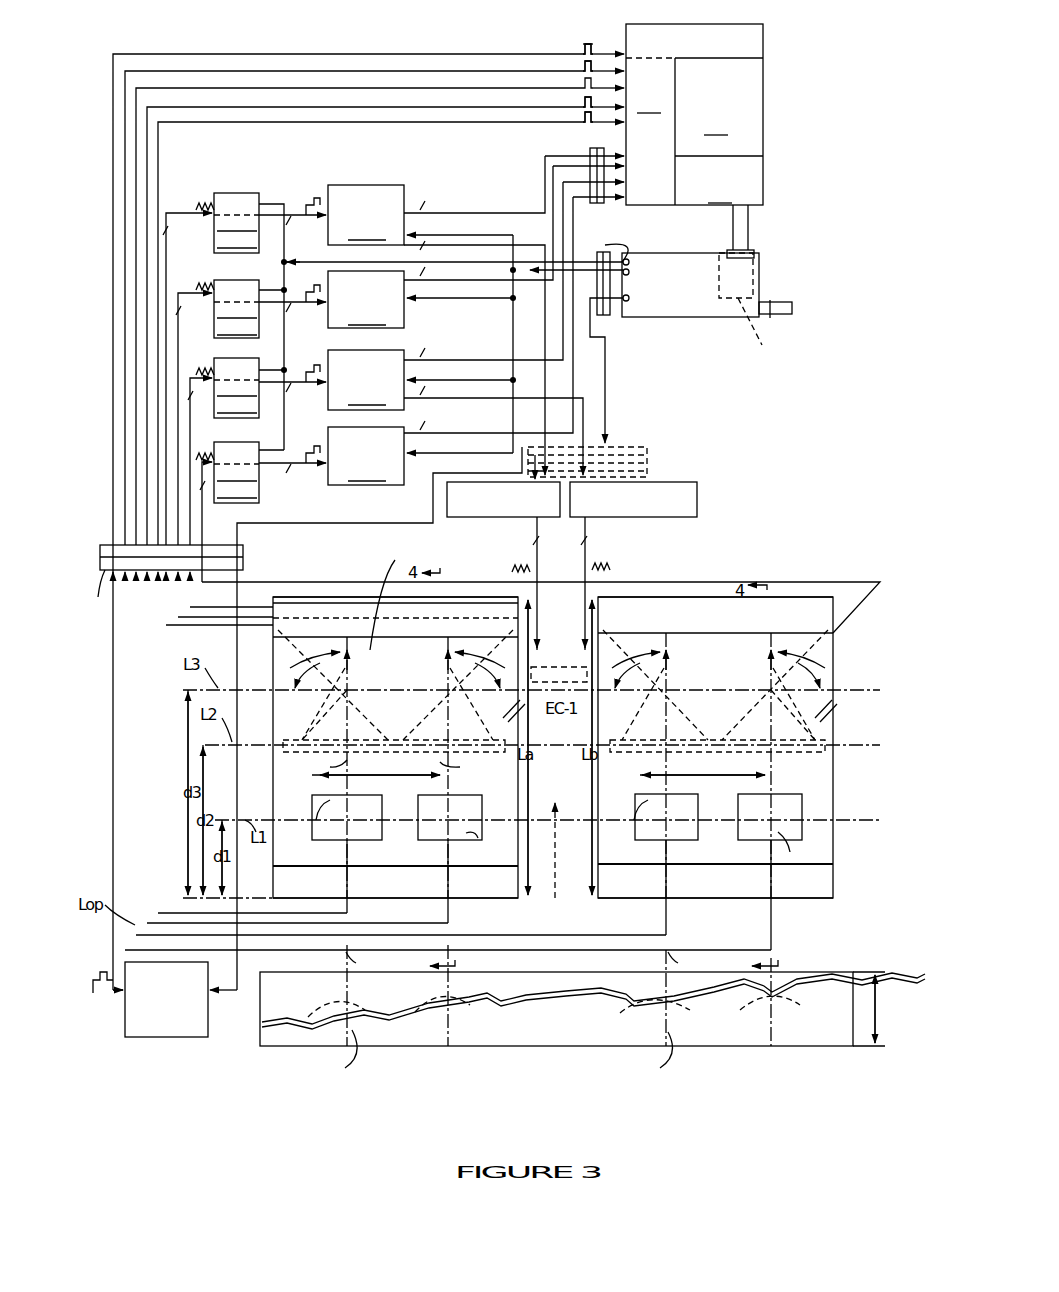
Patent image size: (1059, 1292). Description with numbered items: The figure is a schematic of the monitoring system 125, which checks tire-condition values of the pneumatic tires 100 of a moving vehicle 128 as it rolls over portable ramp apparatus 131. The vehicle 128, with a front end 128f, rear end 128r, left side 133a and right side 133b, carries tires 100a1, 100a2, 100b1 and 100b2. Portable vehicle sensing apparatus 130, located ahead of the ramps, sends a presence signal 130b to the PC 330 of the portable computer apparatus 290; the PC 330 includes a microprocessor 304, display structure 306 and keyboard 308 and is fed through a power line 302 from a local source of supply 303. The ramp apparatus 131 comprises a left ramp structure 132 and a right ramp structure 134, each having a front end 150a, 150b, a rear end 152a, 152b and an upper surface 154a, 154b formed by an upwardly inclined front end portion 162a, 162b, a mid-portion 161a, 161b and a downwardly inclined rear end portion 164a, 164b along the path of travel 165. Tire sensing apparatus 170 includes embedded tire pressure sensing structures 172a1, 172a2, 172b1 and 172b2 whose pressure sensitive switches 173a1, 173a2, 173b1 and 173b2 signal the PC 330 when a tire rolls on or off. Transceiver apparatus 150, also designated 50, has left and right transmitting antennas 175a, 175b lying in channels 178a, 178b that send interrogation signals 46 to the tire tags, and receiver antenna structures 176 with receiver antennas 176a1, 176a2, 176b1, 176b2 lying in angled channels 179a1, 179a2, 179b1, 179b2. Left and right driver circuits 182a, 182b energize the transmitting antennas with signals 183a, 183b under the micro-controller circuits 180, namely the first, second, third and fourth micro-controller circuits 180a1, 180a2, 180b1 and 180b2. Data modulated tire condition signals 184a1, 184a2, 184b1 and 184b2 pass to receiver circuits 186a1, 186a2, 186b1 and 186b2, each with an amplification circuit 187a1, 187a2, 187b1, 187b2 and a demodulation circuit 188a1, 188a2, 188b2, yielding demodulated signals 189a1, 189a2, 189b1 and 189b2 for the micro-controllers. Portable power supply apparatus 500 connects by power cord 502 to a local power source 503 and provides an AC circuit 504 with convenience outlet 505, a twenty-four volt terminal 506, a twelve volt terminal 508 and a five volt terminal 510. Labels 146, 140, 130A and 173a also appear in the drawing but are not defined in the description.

The signal wires 146 is at (388, 132).
The transceiver apparatus 150 is at (388, 50).
The pressure sensitive switch 173b1 is at (583, 70).
The pressure sensitive switch 173b2 is at (583, 53).
The pressure sensitive switch 173a2 is at (583, 100).
The pulse signal 173a is at (583, 117).
The vehicle presence signal 130b is at (560, 10).
The PC 330 is at (727, 108).
The portable computer apparatus 290 is at (738, 92).
The microprocessor 304 is at (648, 91).
The display structure 306 is at (711, 116).
The keyboard 308 is at (712, 185).
The 12 VDC outlet terminal 508 is at (664, 232).
The 5 VDC outlet terminal 510 is at (615, 262).
The power line 302 is at (750, 230).
The local source of supply 303 is at (753, 250).
The portable power supply apparatus 500 is at (739, 316).
The convenience outlet 505 is at (755, 266).
The power cord 502 is at (768, 303).
The 125 VAC circuit 504 is at (763, 334).
The local power source 503 is at (800, 355).
The 24 VDC outlet terminal 506 is at (630, 318).
The first receiver circuit 186a1 is at (246, 204).
The amplification circuit 187a1 is at (237, 224).
The demodulation circuit 188a1 is at (237, 241).
The second receiver circuit 186a2 is at (246, 297).
The amplification circuit 187a2 is at (237, 311).
The demodulation circuit 188a2 is at (237, 328).
The third receiver circuit 186b1 is at (271, 413).
The amplification circuit 187b1 is at (237, 389).
The demodulation circuit 188b2 is at (237, 449).
The fourth receiver circuit 186b2 is at (271, 454).
The amplification circuit 187b2 is at (237, 474).
The data modulated tire condition signal 184a1 is at (196, 208).
The data modulated tire condition signal 184a2 is at (196, 288).
The data modulated tire condition signal 184b1 is at (196, 372).
The data modulated tire condition signal 184b2 is at (196, 457).
The demodulated signal 189a1 is at (306, 205).
The demodulated signal 189a2 is at (306, 292).
The demodulated signal 189b1 is at (314, 365).
The demodulated signal 189b2 is at (306, 448).
The micro-controller circuits 180 is at (404, 335).
The first micro-controller circuit 180a1 is at (366, 215).
The second micro-controller circuit 180a2 is at (366, 299).
The third micro-controller circuit 180b1 is at (366, 380).
The fourth micro-controller circuit 180b2 is at (366, 456).
The transceiver apparatus 50 is at (415, 496).
The monitoring system 125 is at (639, 530).
The left transmitter antenna driver circuit 182a is at (480, 517).
The right transmitter antenna driver circuit 182b is at (697, 512).
The antenna energizing signal 183a is at (510, 575).
The antenna energizing signal 183b is at (600, 568).
The portable ramp apparatus 131 is at (823, 550).
The left ramp structure 132 is at (527, 738).
The right ramp structure 134 is at (742, 750).
The rear end of left ramp structure 152a is at (322, 597).
The rear end of right ramp structure 152b is at (722, 595).
The receiver antenna structures 176 is at (715, 575).
The rear end portion of left ramp 164a is at (395, 645).
The rear end portion of right ramp 164b is at (688, 655).
The receiver antenna 176a1 is at (344, 670).
The receiver antenna 176a2 is at (458, 670).
The receiver antenna 176b1 is at (664, 670).
The receiver antenna 176b2 is at (776, 670).
The channel 179a1 is at (333, 685).
The channel 179a2 is at (458, 685).
The channel 179b1 is at (655, 685).
The channel 179b2 is at (776, 685).
The elongate channel 178a is at (396, 715).
The elongate channel 178b is at (793, 715).
The left transmitting antenna 175a is at (290, 738).
The right transmitting antenna 175b is at (830, 748).
The interrogation signal 46 is at (520, 712).
The upper surface of left ramp 154a is at (280, 760).
The upper surface of right ramp 154b is at (815, 790).
The drive lines 140 is at (580, 652).
The tire sensing apparatus 170 is at (326, 795).
The tire pressure sensing structure 172a1 is at (347, 854).
The tire pressure sensing structure 172a2 is at (450, 859).
The tire pressure sensing structure 172b1 is at (666, 864).
The tire pressure sensing structure 172b2 is at (770, 872).
The pressure sensitive switch 173a1 is at (325, 833).
The front end portion of left ramp 162a is at (430, 864).
The front end portion of right ramp 162b is at (760, 862).
The mid-portion of left ramp 161a is at (328, 868).
The mid-portion of right ramp 161b is at (738, 868).
The path of travel 165 is at (555, 850).
The front end of left ramp structure 150a is at (415, 905).
The front end of right ramp structure 150b is at (680, 900).
The portable vehicle sensing apparatus 130 is at (166, 1018).
The proximity sensing device 130A is at (182, 1042).
The moving vehicle 128 is at (570, 1006).
The front end of vehicle 128f is at (636, 970).
The rear end of vehicle 128r is at (520, 1048).
The left side of vehicle 133a is at (262, 1020).
The right side of vehicle 133b is at (855, 1025).
The pneumatic tire 100 is at (395, 1008).
The tire 100a1 is at (330, 992).
The tire 100a2 is at (488, 992).
The tire 100b1 is at (642, 992).
The tire 100b2 is at (830, 991).